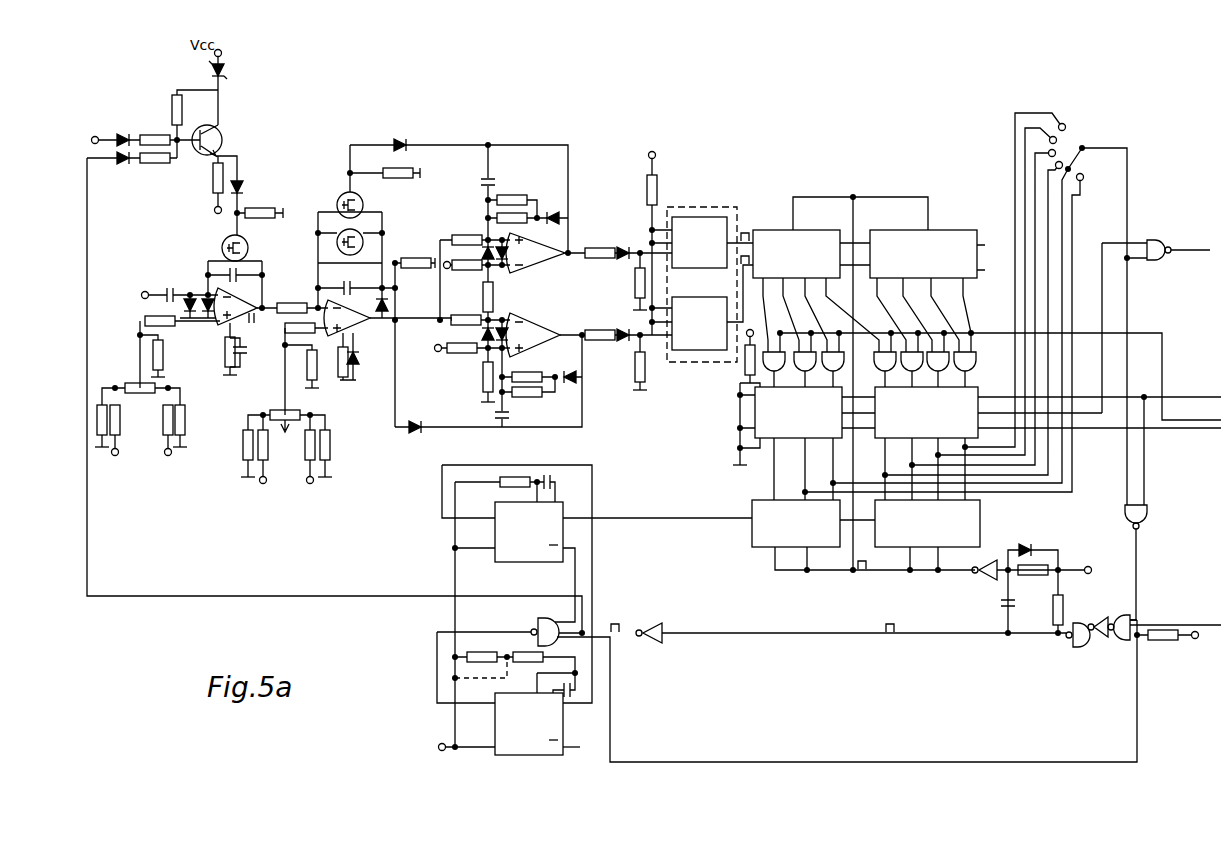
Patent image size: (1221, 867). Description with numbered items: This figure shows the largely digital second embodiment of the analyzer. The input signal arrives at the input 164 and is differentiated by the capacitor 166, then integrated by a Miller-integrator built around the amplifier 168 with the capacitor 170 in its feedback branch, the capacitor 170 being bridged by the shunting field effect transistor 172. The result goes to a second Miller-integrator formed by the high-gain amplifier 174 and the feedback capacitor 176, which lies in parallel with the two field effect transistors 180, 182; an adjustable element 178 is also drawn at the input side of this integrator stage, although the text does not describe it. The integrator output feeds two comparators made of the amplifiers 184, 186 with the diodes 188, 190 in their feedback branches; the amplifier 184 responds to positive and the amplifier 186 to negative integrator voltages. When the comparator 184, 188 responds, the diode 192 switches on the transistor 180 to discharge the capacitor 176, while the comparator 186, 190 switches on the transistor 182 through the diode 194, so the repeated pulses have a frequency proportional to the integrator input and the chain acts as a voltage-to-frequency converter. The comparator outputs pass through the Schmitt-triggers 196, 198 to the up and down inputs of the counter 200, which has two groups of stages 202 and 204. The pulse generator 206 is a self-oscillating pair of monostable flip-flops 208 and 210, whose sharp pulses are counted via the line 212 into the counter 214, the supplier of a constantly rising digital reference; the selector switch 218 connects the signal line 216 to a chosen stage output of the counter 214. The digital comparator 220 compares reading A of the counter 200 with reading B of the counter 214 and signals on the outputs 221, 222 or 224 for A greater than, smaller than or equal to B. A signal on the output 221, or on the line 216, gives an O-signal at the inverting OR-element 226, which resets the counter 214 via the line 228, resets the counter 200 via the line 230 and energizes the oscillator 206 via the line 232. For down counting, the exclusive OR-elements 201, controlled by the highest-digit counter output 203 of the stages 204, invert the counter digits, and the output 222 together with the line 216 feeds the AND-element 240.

The input 164 is at (156, 302).
The capacitor 166 is at (169, 290).
The amplifier 168 is at (292, 302).
The capacitor 170 is at (228, 286).
The shunting field effect transistor 172 is at (248, 254).
The high-gain amplifier 174 is at (378, 318).
The capacitor 176 is at (346, 287).
The potentiometer 178 is at (282, 410).
The field effect transistor 180 is at (362, 209).
The field effect transistor 182 is at (365, 243).
The amplifier 184 is at (538, 262).
The amplifier 186 is at (535, 333).
The diode 188 is at (560, 214).
The diode 190 is at (578, 382).
The diode 192 is at (408, 133).
The diode 194 is at (411, 424).
The Schmitt-trigger 196 is at (700, 218).
The Schmitt-trigger 198 is at (694, 306).
The counter 200 is at (856, 222).
The exclusive OR-elements 201 is at (882, 345).
The counter stage group 202 is at (820, 225).
The counter output 203 is at (972, 328).
The counter stage group 204 is at (895, 234).
The pulse generator 206 is at (610, 595).
The monostable flip-flop 208 is at (492, 532).
The monostable flip-flop 210 is at (492, 724).
The line 212 is at (698, 520).
The counter 214 is at (760, 549).
The signal line 216 is at (1128, 206).
The selector switch 218 is at (1086, 139).
The digital comparator 220 is at (753, 417).
The output 221 is at (1084, 397).
The output 222 is at (1078, 415).
The output 224 is at (1085, 436).
The inverting OR-element 226 is at (1140, 524).
The line 228 is at (840, 573).
The line 230 is at (856, 200).
The line 232 is at (690, 633).
The AND-element 240 is at (1160, 246).